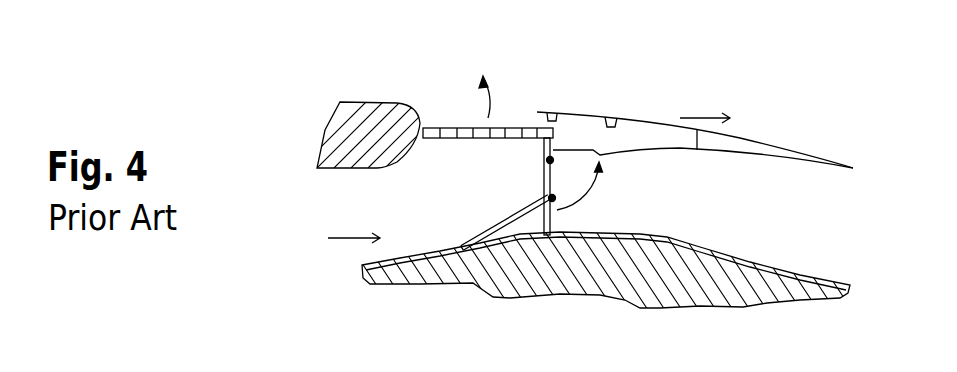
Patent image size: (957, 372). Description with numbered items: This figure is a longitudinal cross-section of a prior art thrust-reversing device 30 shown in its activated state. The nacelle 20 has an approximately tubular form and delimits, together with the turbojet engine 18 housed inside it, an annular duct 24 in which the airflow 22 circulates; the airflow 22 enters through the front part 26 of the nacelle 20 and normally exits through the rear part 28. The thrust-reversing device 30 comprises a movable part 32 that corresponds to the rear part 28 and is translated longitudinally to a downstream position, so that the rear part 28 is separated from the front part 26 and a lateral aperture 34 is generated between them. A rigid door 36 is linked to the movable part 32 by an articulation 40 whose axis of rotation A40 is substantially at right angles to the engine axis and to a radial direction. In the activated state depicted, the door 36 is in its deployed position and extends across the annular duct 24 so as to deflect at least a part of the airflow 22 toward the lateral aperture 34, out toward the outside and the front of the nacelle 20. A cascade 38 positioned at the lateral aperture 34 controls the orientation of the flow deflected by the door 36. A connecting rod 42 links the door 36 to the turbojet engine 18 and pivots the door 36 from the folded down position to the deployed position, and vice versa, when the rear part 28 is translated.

The turbojet engine 18 is at (763, 282).
The nacelle 20 is at (282, 140).
The airflow 22 is at (340, 240).
The annular duct 24 is at (395, 202).
The front part 26 is at (338, 132).
The rear part 28 is at (670, 118).
The thrust-reversing device 30 is at (477, 63).
The movable part 32 is at (641, 124).
The lateral aperture 34 is at (517, 97).
The door 36 is at (557, 181).
The cascade 38 is at (445, 118).
The articulation 40 is at (553, 153).
The axis of rotation A40 is at (555, 161).
The connecting rod 42 is at (505, 212).